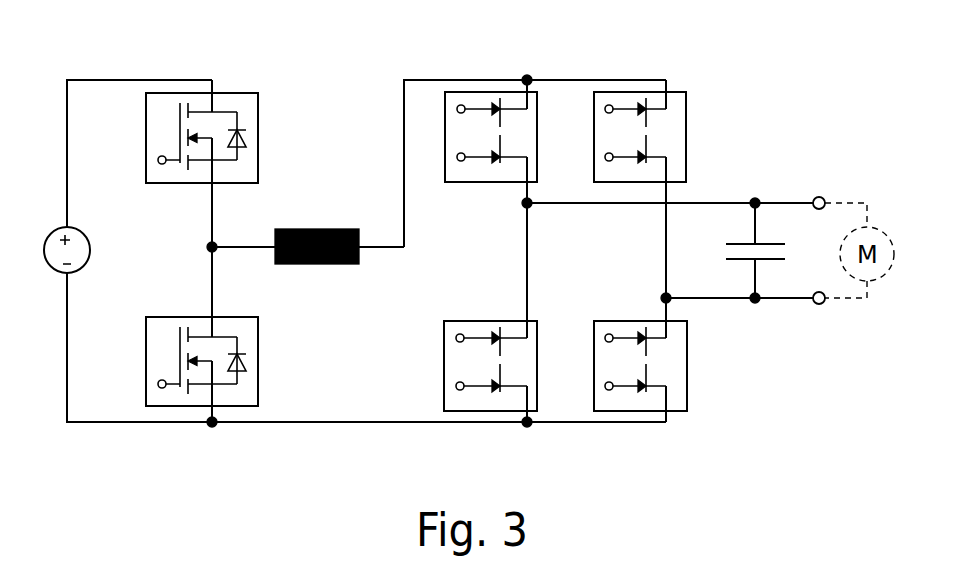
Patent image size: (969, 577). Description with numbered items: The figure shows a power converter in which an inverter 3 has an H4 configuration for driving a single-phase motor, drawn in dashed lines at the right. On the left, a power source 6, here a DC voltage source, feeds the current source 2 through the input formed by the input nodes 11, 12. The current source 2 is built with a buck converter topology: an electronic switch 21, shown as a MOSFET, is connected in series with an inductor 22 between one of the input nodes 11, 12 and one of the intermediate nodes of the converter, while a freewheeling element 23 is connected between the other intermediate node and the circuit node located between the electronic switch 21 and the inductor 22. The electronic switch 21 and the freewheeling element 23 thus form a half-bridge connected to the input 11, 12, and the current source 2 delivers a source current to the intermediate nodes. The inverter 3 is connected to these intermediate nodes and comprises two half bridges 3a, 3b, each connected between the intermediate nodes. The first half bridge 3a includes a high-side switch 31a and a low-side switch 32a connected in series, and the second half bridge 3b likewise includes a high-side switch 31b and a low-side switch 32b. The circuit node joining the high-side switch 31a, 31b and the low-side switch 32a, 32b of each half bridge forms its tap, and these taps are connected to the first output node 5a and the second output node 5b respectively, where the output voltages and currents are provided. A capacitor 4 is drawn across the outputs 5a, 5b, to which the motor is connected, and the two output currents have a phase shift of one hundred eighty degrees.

The current source 2 is at (273, 213).
The inverter 3 is at (545, 253).
The first half bridge 3a is at (483, 293).
The second half bridge 3b is at (634, 293).
The capacitor 4 is at (737, 183).
The first output node 5a is at (821, 188).
The second output node 5b is at (821, 315).
The power source 6 is at (62, 228).
The input node 11 is at (134, 135).
The input node 12 is at (351, 353).
The electronic switch 21 is at (185, 184).
The inductor 22 is at (318, 265).
The freewheeling element 23 is at (155, 316).
The high-side switch 31a is at (483, 183).
The high-side switch 31b is at (623, 183).
The low-side switch 32a is at (465, 320).
The low-side switch 32b is at (603, 320).